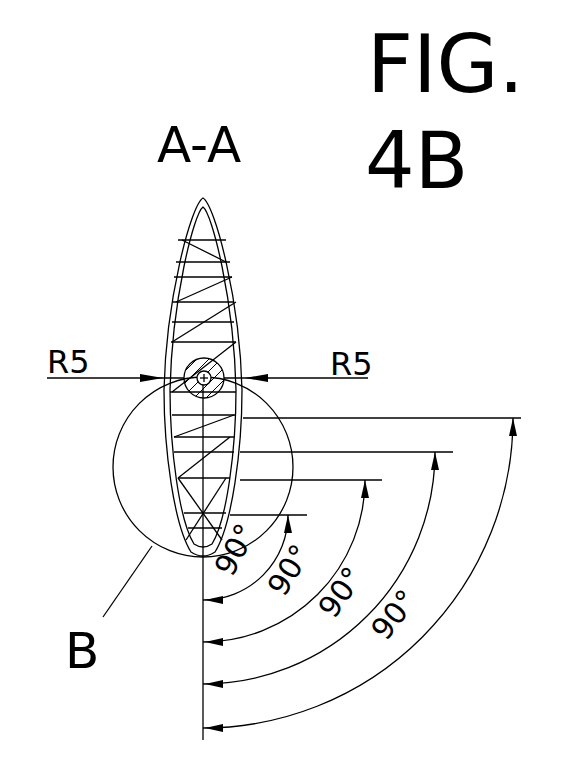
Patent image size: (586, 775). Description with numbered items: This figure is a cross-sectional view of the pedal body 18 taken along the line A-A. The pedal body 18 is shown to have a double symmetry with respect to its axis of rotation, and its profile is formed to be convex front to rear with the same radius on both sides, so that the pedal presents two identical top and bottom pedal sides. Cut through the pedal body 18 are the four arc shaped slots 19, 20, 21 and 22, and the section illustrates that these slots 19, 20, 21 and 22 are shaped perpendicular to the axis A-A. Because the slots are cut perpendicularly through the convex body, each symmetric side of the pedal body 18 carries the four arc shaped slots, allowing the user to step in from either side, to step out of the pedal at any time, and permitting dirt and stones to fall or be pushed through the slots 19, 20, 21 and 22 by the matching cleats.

The pedal body 18 is at (294, 343).
The arc shaped slot 19 is at (149, 516).
The arc shaped slot 20 is at (143, 444).
The arc shaped slot 21 is at (145, 289).
The arc shaped slot 22 is at (151, 224).